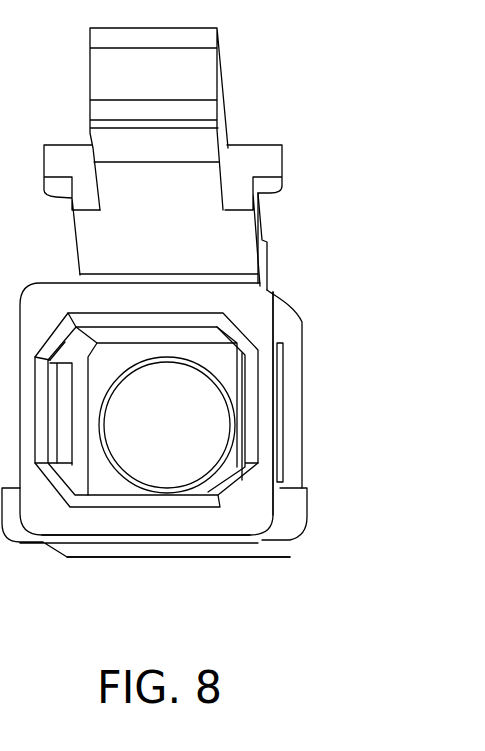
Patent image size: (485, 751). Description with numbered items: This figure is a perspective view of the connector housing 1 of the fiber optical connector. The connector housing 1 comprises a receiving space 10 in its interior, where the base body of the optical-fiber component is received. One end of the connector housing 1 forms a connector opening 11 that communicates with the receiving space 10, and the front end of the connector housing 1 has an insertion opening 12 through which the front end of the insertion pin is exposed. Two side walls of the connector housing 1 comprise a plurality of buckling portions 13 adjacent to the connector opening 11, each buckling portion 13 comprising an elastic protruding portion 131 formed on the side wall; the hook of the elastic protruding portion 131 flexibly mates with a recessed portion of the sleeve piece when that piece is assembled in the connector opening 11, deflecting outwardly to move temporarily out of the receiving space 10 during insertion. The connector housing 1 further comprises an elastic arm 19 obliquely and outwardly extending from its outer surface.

The connector housing 1 is at (305, 477).
The receiving space 10 is at (198, 361).
The connector opening 11 is at (97, 491).
The insertion opening 12 is at (206, 448).
The buckling portion 13 is at (344, 416).
The elastic protruding portion 131 is at (280, 413).
The elastic arm 19 is at (213, 91).